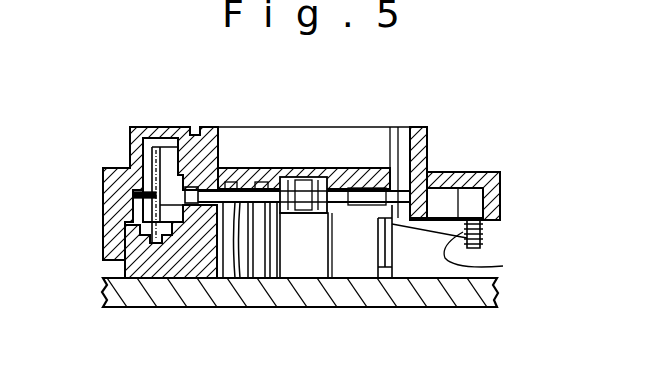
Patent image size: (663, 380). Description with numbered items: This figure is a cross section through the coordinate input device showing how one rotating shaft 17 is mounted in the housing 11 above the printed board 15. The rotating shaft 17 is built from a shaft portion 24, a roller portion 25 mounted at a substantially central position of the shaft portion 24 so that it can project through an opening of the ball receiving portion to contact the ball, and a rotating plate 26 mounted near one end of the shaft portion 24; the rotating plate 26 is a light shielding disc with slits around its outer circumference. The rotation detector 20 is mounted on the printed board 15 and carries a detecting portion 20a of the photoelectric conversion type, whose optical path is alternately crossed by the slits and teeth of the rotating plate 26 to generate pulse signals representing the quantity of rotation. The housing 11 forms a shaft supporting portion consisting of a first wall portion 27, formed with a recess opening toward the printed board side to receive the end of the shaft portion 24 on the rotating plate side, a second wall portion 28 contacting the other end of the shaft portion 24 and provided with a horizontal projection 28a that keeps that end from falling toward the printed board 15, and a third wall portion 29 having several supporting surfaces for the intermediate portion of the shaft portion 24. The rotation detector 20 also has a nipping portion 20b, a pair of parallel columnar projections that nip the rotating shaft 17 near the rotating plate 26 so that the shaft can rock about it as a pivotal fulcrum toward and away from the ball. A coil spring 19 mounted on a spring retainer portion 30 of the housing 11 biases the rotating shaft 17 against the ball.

The housing 11 is at (433, 123).
The printed board 15 is at (475, 308).
The rotating shaft 17 is at (243, 187).
The coil spring 19 is at (462, 252).
The rotation detector 20 is at (143, 280).
The detecting portion 20a is at (140, 243).
The nipping portion 20b is at (203, 172).
The shaft portion 24 is at (349, 186).
The roller portion 25 is at (304, 180).
The rotating plate 26 is at (157, 143).
The first wall portion 27 is at (138, 214).
The second wall portion 28 is at (444, 190).
The horizontal projection 28a is at (397, 212).
The third wall portion 29 is at (210, 208).
The spring retainer portion 30 is at (488, 247).